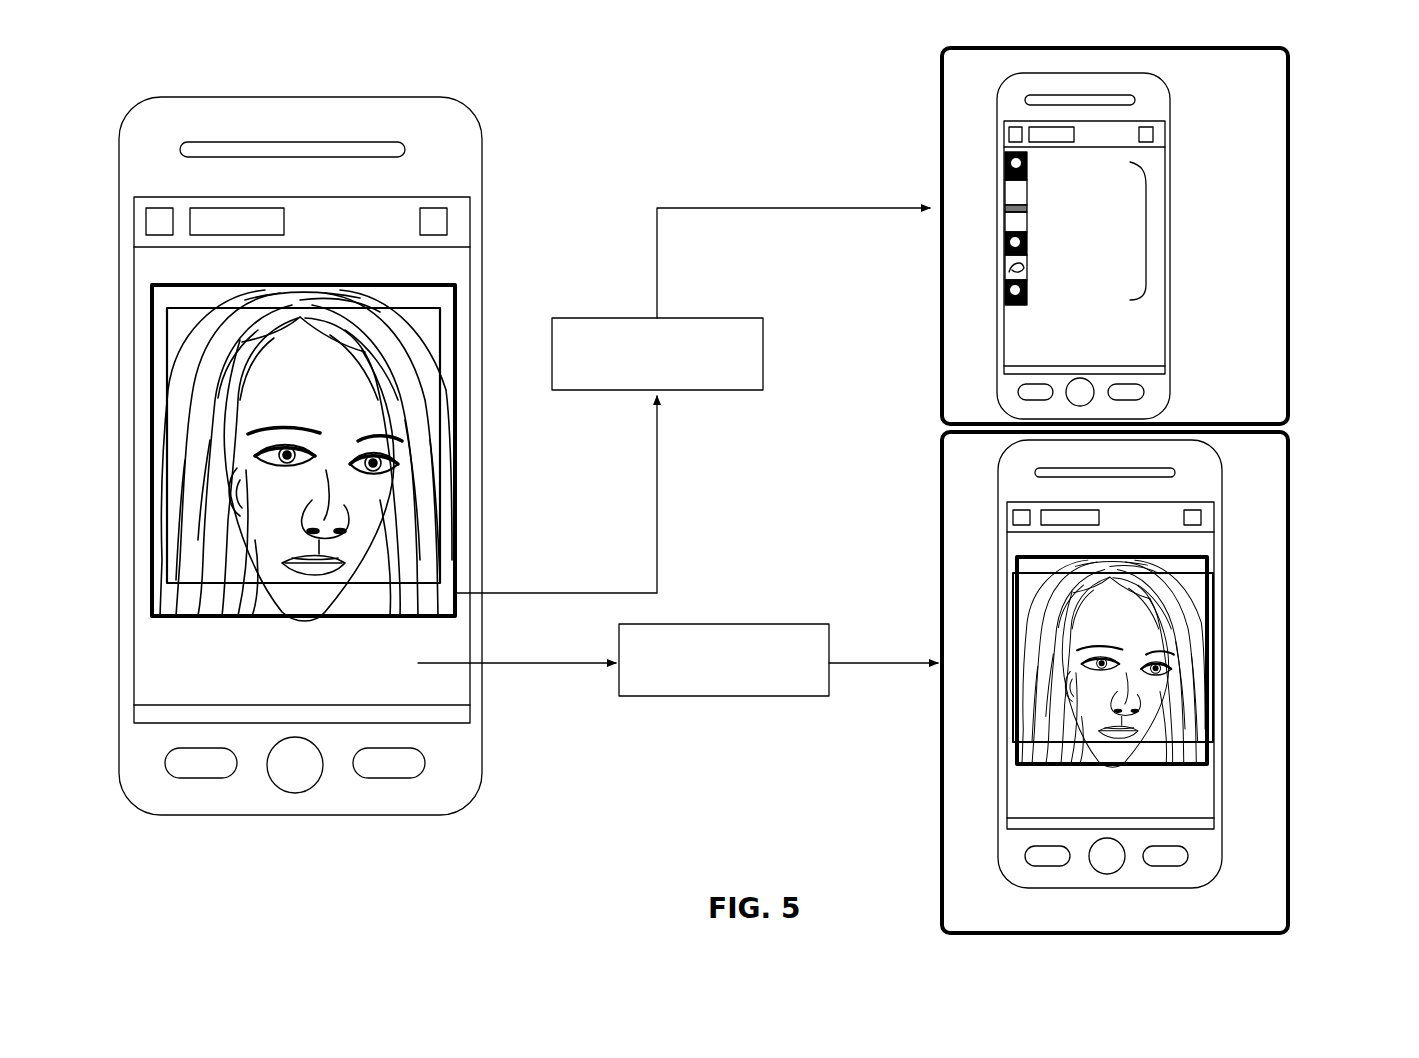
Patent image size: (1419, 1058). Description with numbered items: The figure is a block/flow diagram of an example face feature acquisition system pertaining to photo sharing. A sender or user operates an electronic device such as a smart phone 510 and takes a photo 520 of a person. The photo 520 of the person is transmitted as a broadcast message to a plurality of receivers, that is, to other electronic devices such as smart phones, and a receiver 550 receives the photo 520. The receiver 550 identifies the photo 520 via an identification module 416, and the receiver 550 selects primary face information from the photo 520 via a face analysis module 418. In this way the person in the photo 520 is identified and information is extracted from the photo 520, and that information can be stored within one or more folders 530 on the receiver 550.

The smart phone 510 is at (370, 96).
The photo 520 is at (455, 547).
The face analysis module 418 is at (632, 318).
The identification module 416 is at (767, 624).
The receiver 550 is at (1165, 490).
The folders 530 is at (1146, 230).